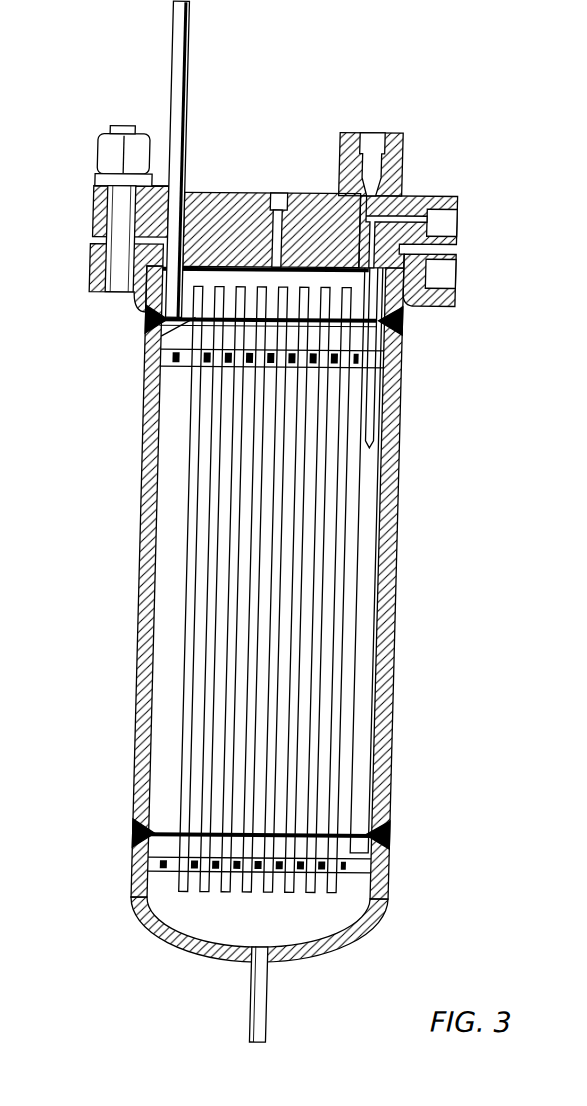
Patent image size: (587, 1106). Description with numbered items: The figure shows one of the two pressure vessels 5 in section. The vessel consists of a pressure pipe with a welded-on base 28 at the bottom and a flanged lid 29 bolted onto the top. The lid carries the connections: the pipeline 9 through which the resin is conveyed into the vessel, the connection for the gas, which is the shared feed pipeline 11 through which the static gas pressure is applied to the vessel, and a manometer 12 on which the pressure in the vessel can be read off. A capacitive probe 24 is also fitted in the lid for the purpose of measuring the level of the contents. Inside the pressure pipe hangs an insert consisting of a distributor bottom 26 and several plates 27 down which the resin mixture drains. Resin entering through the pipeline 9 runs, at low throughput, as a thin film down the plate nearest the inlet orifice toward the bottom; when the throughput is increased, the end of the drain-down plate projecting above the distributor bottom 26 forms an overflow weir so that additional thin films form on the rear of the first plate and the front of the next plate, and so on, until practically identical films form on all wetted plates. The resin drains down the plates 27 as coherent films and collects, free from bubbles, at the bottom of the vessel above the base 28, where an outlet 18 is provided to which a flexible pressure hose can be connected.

The pressure vessel 5 is at (388, 523).
The pipeline 9 is at (168, 109).
The feed pipeline 11 is at (435, 222).
The manometer 12 is at (268, 192).
The outlet 18 is at (268, 979).
The capacitive probe 24 is at (361, 140).
The distributor bottom 26 is at (155, 355).
The plates 27 is at (158, 332).
The base 28 is at (383, 882).
The flanged lid 29 is at (200, 214).